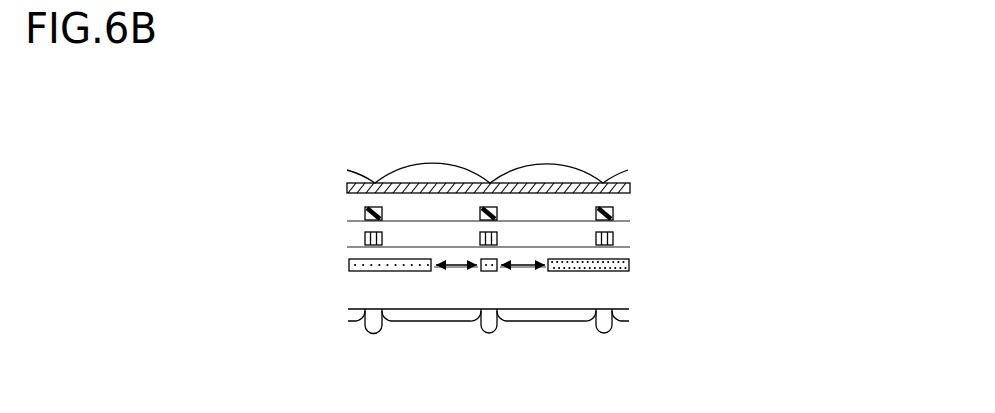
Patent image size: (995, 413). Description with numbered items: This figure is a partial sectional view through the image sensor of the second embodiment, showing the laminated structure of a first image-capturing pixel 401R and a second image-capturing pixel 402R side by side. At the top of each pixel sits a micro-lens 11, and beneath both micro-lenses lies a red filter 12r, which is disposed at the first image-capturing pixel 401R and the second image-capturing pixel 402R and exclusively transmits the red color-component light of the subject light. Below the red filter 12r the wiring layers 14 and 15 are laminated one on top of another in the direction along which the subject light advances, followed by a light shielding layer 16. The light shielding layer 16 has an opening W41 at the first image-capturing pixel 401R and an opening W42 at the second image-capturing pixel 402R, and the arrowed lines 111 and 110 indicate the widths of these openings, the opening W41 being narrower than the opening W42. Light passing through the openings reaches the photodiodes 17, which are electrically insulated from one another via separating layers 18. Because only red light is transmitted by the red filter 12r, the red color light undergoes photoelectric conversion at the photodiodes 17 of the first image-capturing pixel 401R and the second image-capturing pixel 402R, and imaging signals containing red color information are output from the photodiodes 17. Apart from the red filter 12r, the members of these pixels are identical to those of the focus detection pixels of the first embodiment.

The micro-lens 11 is at (422, 170).
The red color filter 12r is at (453, 183).
The wiring layer 14 is at (365, 215).
The wiring layer 15 is at (365, 237).
The light shielding layer 16 is at (348, 263).
The photodiode 17 is at (407, 312).
The separating layer 18 is at (372, 328).
The arrowed line 110 is at (531, 268).
The arrowed line 111 is at (462, 268).
The first image-capturing pixel 401R is at (393, 172).
The second image-capturing pixel 402R is at (583, 170).
The opening W41 is at (448, 264).
The opening W42 is at (525, 264).